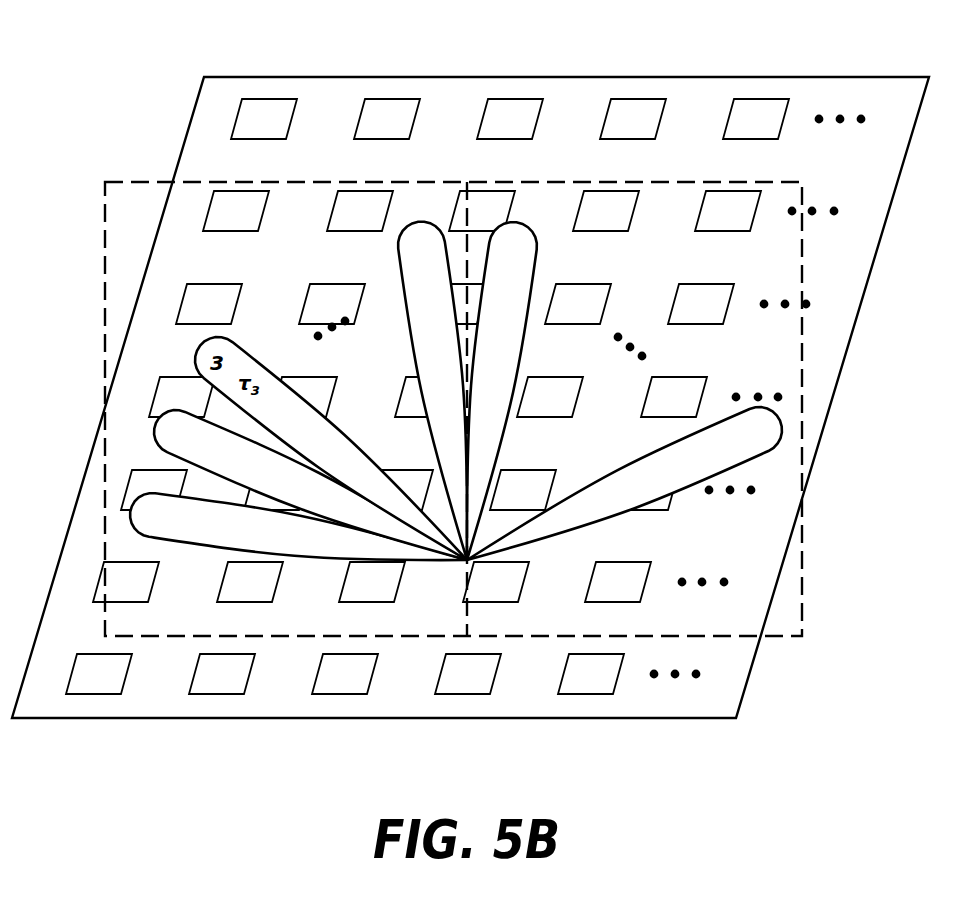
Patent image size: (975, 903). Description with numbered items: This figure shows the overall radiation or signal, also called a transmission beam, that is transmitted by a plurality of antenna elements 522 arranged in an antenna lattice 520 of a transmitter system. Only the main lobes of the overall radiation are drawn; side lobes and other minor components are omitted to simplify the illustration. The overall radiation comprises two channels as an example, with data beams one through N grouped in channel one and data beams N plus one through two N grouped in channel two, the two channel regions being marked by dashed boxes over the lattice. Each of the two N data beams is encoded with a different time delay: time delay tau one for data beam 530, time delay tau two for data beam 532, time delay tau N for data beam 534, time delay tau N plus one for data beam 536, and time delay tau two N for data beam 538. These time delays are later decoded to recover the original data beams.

The antenna lattice 520 is at (759, 77).
The antenna elements 522 is at (235, 202).
The data beam 530 is at (138, 505).
The data beam 532 is at (156, 430).
The data beam 534 is at (421, 222).
The data beam 536 is at (525, 230).
The data beam 538 is at (778, 420).